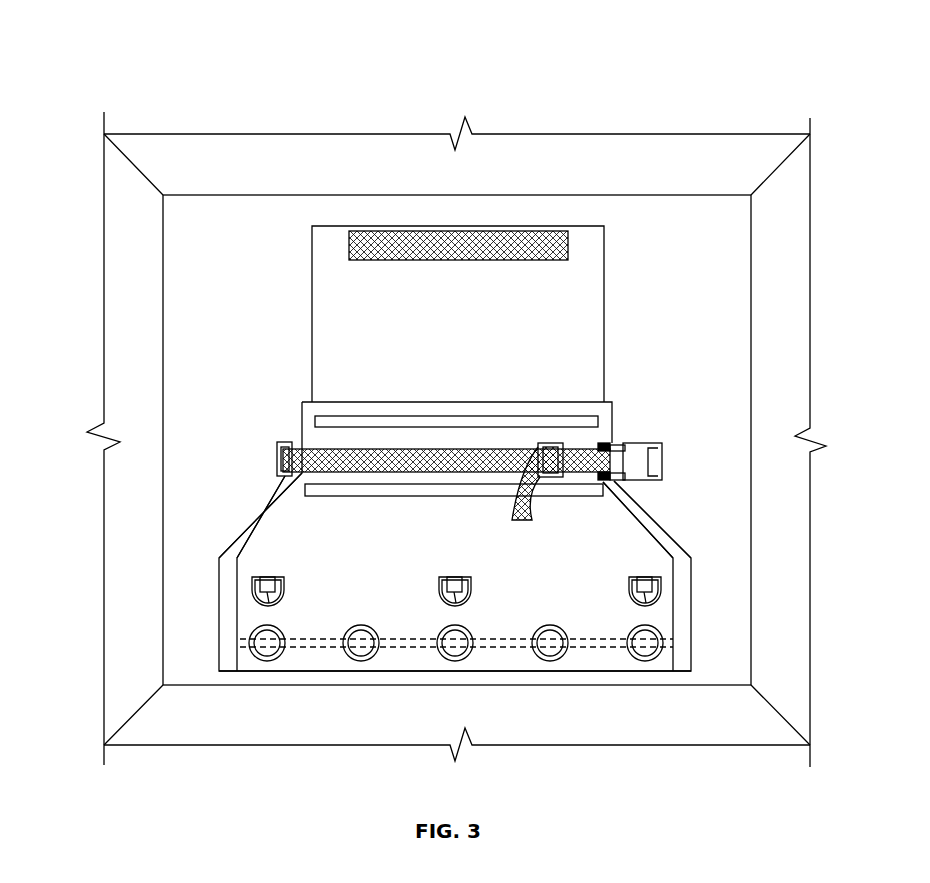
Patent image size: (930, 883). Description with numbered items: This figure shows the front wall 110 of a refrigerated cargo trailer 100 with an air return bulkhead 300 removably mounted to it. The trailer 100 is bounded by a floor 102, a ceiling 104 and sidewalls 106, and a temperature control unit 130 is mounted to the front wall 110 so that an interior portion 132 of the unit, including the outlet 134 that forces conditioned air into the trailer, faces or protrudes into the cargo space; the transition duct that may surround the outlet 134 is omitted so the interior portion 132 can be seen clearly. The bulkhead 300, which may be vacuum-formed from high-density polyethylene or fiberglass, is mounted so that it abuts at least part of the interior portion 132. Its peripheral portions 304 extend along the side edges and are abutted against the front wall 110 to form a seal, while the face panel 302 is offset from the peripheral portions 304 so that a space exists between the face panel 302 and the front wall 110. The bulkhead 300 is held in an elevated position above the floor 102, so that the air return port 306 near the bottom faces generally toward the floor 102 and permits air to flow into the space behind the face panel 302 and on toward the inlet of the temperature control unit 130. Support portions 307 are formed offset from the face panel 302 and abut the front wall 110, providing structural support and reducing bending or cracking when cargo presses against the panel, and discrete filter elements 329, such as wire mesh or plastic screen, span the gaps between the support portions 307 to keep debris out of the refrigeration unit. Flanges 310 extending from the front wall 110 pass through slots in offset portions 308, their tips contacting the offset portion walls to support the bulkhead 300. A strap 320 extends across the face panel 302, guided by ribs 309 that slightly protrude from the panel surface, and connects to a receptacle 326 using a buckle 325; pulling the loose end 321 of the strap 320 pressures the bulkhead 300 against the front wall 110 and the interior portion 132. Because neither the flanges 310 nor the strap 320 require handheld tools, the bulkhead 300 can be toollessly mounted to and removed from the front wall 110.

The trailer 100 is at (146, 42).
The floor 102 is at (296, 747).
The ceiling 104 is at (206, 143).
The sidewalls 106 is at (115, 230).
The front wall 110 is at (176, 291).
The temperature control unit 130 is at (604, 286).
The interior portion of the temperature control unit 132 is at (334, 309).
The outlet 134 is at (401, 233).
The air return bulkhead 300 is at (251, 526).
The face panel 302 is at (397, 534).
The peripheral portions 304 is at (272, 501).
The air return port 306 is at (395, 680).
The support portions 307 is at (266, 650).
The offset portion 308 is at (270, 600).
The ribs 309 is at (315, 422).
The flange 310 is at (277, 580).
The strap 320 is at (279, 453).
The loose end of the strap 321 is at (522, 517).
The buckle 325 is at (607, 446).
The receptacle 326 is at (653, 463).
The filter element 329 is at (388, 632).